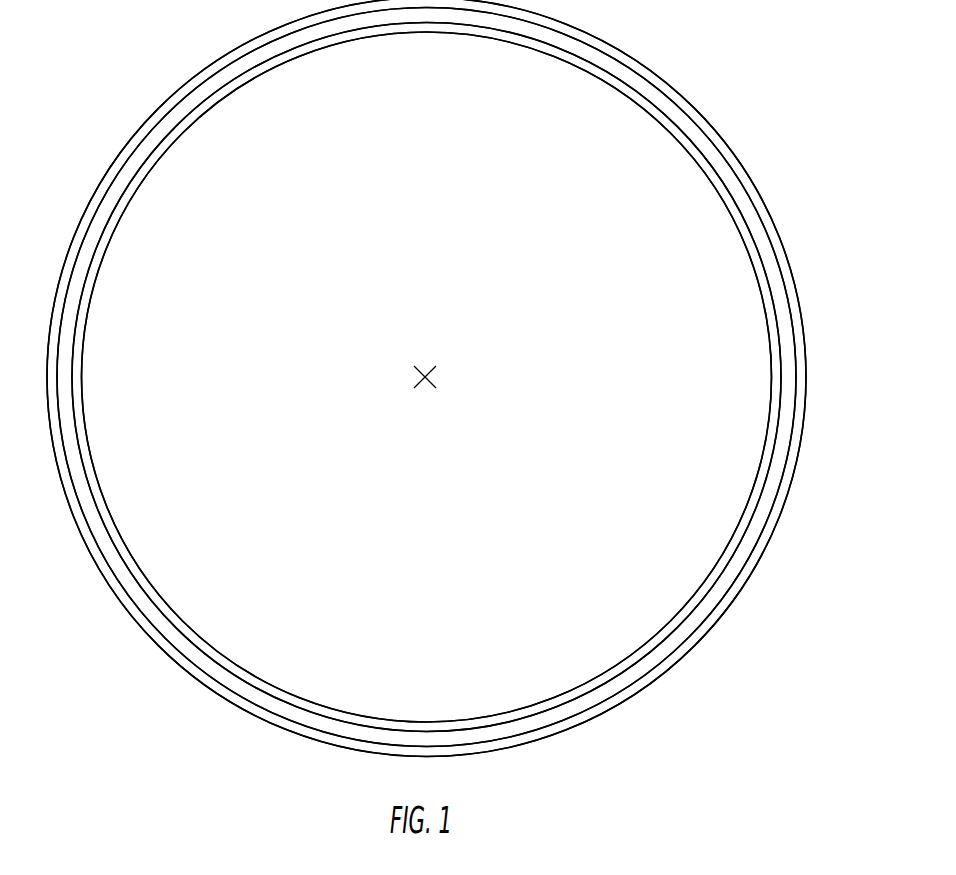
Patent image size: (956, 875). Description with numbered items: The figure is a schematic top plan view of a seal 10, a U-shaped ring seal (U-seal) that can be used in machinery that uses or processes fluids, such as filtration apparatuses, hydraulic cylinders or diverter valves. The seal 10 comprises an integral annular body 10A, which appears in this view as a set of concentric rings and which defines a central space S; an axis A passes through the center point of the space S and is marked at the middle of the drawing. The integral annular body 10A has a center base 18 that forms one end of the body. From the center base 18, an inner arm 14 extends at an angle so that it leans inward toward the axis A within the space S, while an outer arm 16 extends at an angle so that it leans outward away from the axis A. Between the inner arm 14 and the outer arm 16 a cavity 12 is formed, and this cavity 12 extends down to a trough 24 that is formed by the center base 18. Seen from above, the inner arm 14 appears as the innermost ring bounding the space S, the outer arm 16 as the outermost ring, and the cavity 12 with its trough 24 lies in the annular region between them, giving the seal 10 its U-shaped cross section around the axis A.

The seal 10 is at (233, 733).
The integral annular body 10A is at (640, 62).
The cavity 12 is at (235, 680).
The inner arm 14 is at (148, 580).
The outer arm 16 is at (713, 621).
The center base 18 is at (373, 735).
The trough 24 is at (627, 678).
The space S is at (695, 232).
The axis A is at (428, 379).